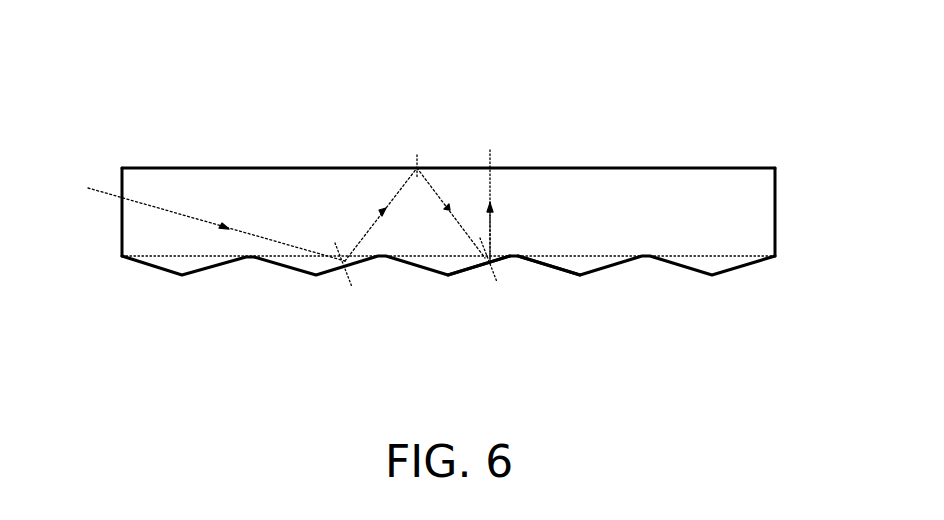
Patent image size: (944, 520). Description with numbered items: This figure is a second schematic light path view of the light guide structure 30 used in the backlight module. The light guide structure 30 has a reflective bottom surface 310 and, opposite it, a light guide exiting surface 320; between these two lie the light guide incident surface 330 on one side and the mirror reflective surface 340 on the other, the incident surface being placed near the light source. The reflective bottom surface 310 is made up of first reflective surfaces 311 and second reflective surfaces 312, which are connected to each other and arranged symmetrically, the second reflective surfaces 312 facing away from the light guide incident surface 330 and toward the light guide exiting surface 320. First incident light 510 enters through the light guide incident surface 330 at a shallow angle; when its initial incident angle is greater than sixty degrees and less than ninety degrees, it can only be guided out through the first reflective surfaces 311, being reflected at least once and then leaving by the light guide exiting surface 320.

The light guide structure 30 is at (138, 61).
The reflective bottom surface 310 is at (602, 341).
The first reflective surfaces 311 is at (473, 269).
The second reflective surfaces 312 is at (555, 268).
The light guide exiting surface 320 is at (604, 167).
The light guide incident surface 330 is at (122, 223).
The mirror reflective surface 340 is at (777, 210).
The first incident light 510 is at (98, 190).